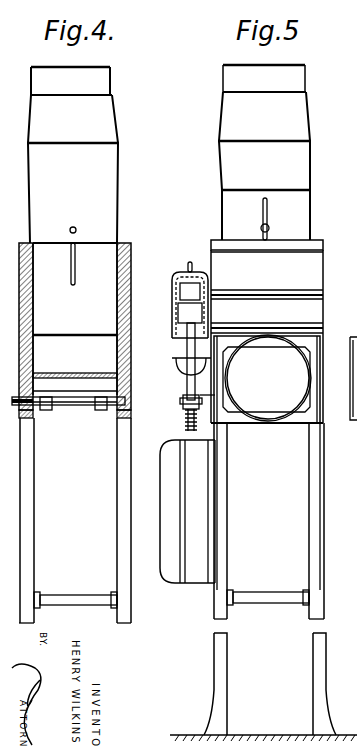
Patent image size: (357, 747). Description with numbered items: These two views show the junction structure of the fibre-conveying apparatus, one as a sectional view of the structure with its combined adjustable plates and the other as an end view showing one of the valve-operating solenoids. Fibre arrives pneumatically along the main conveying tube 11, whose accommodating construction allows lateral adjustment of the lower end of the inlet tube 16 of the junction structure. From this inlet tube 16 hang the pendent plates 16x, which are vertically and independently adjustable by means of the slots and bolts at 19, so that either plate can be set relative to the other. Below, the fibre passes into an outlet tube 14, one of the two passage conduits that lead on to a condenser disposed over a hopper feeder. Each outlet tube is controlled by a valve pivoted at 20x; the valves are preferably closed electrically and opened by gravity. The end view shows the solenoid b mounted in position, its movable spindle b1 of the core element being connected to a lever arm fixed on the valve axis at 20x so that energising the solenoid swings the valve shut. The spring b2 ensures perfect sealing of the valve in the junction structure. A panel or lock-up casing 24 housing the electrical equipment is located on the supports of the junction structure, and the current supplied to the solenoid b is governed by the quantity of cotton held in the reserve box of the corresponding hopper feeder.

In FIG. 4, the main conveying tube 11 is at (116, 69).
In FIG. 5, the main conveying tube 11 is at (309, 62).
In FIG. 4, the inlet tube 16 is at (73, 169).
In FIG. 5, the inlet tube 16 is at (264, 141).
In FIG. 4, the pendent plates 16x is at (75, 319).
In FIG. 5, the pendent plates 16x is at (304, 211).
In FIG. 4, the slots and bolts 19 is at (82, 231).
In FIG. 5, the slots and bolts 19 is at (259, 218).
In FIG. 4, the valve pivot 20x is at (67, 414).
In FIG. 5, the outlet tube 14 is at (267, 378).
In FIG. 5, the panel or lock-up casing 24 is at (222, 511).
In FIG. 5, the solenoid b is at (185, 268).
In FIG. 5, the movable spindle b1 is at (189, 359).
In FIG. 5, the spring b2 is at (178, 425).